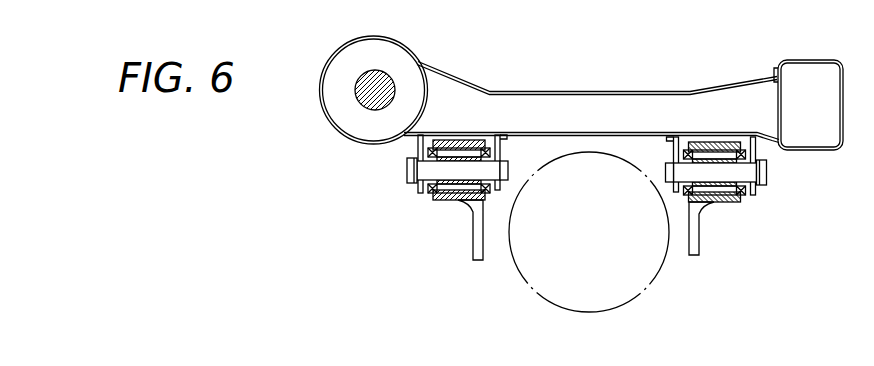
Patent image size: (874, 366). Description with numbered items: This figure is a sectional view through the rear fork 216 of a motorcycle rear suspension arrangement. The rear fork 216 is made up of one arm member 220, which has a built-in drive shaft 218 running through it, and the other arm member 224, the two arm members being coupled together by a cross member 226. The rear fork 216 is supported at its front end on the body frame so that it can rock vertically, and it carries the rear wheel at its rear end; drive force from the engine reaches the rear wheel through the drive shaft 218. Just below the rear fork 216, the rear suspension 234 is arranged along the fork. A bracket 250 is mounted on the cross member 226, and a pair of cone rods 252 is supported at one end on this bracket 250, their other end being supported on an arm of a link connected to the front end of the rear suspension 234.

The rear fork 216 is at (535, 91).
The drive shaft 218 is at (385, 73).
The arm member 220 is at (333, 58).
The other arm member 224 is at (822, 60).
The cross member 226 is at (607, 91).
The rear suspension 234 is at (645, 287).
The bracket 250 is at (418, 150).
The cone rods 252 is at (477, 233).